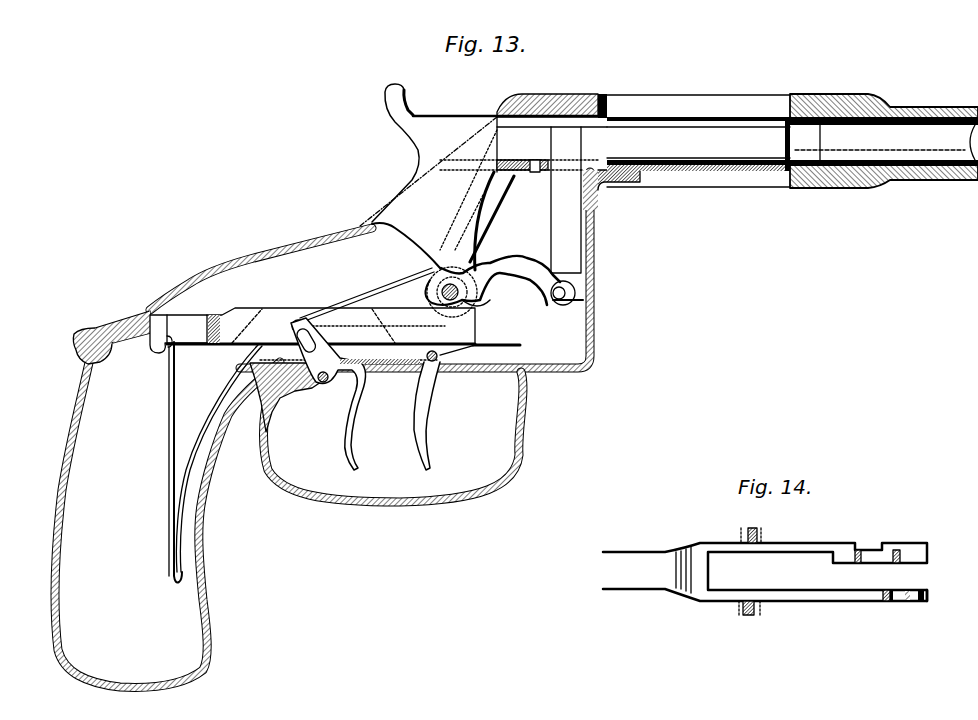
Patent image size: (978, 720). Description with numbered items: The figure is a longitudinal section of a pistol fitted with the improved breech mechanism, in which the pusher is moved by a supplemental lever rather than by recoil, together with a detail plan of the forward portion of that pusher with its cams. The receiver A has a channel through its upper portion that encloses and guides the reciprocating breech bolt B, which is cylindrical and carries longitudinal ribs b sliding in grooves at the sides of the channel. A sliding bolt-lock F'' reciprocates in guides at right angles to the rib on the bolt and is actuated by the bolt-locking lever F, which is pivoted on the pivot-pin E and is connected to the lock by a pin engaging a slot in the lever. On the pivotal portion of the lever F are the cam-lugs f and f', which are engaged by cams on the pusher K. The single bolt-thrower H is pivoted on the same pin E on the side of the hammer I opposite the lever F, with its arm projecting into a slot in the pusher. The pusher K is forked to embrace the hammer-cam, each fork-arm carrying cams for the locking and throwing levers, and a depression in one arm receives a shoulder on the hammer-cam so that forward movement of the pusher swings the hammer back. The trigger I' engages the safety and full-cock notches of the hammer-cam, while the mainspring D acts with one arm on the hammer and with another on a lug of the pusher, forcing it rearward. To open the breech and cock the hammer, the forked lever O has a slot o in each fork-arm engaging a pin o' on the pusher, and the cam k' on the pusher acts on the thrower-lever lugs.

In FIG. 13, the receiver A is at (347, 381).
In FIG. 13, the reciprocating breech bolt B is at (618, 113).
In FIG. 13, the longitudinal rib b is at (698, 142).
In FIG. 13, the hammer I is at (428, 177).
In FIG. 13, the bolt-thrower H is at (490, 212).
In FIG. 13, the breech block F'' is at (566, 200).
In FIG. 13, the pivot-pin E is at (464, 230).
In FIG. 13, the bolt-locking lever F is at (492, 280).
In FIG. 13, the cam-lug f is at (437, 292).
In FIG. 13, the cam-lug f' is at (480, 305).
In FIG. 13, the pusher K is at (321, 334).
In FIG. 14, the pusher K is at (765, 564).
In FIG. 13, the mainspring D is at (52, 531).
In FIG. 13, the pin o' is at (299, 310).
In FIG. 14, the pin o' is at (748, 575).
In FIG. 13, the slot o is at (328, 394).
In FIG. 14, the slot o is at (752, 573).
In FIG. 13, the trigger I' is at (430, 394).
In FIG. 14, the cam k' is at (923, 608).